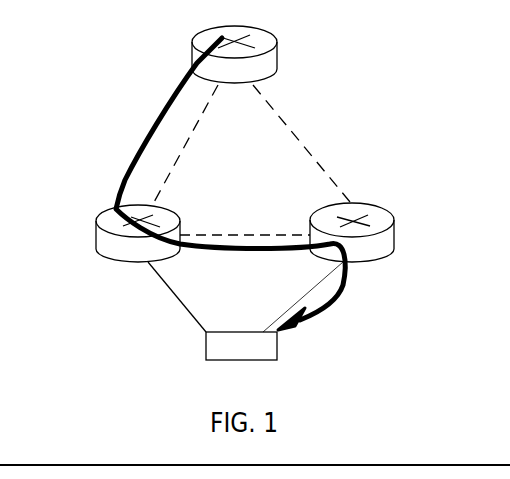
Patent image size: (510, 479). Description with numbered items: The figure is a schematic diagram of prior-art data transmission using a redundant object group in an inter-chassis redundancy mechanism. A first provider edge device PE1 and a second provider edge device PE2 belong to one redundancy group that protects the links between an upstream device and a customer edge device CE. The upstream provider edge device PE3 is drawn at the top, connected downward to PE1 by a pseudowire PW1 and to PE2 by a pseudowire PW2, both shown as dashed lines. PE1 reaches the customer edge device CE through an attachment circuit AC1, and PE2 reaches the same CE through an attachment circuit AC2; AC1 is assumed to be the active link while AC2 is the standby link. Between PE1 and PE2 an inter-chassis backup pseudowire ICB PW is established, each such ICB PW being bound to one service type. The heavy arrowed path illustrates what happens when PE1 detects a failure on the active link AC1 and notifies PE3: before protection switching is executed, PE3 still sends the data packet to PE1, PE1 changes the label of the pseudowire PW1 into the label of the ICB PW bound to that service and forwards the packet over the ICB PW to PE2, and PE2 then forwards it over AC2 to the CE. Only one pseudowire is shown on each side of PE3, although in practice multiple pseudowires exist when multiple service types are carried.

The PE3 provider edge device PE3 is at (234, 44).
The PE1 provider edge device PE1 is at (118, 233).
The PE2 provider edge device PE2 is at (371, 232).
The customer edge device CE is at (241, 346).
The pseudowire PW1 is at (198, 144).
The pseudowire PW2 is at (301, 143).
The inter-chassis backup pseudowire ICB PW is at (245, 221).
The attachment circuit AC1 is at (168, 297).
The attachment circuit AC2 is at (312, 297).